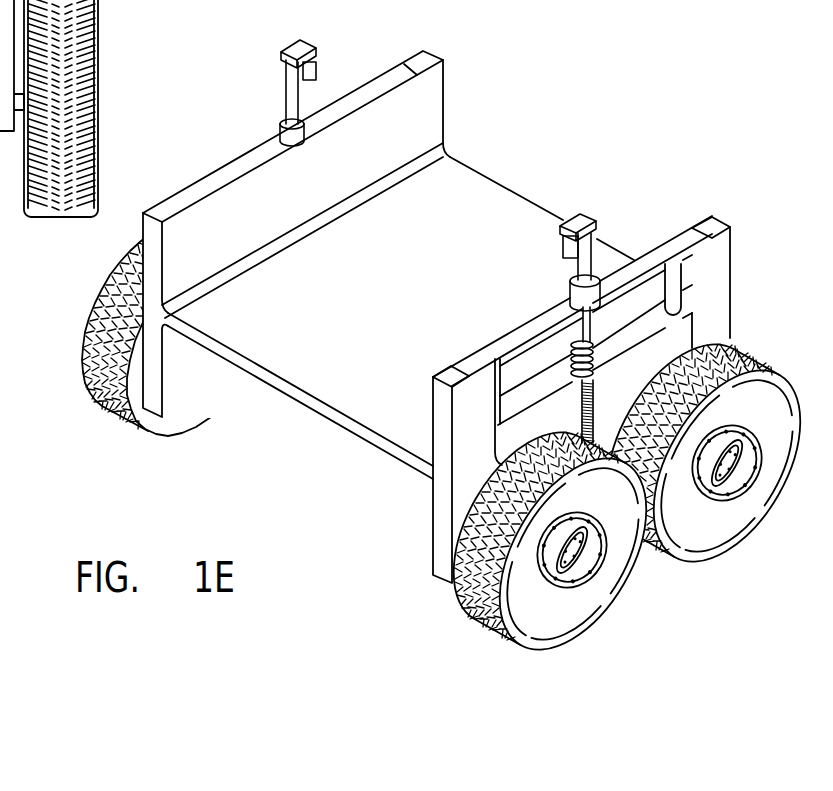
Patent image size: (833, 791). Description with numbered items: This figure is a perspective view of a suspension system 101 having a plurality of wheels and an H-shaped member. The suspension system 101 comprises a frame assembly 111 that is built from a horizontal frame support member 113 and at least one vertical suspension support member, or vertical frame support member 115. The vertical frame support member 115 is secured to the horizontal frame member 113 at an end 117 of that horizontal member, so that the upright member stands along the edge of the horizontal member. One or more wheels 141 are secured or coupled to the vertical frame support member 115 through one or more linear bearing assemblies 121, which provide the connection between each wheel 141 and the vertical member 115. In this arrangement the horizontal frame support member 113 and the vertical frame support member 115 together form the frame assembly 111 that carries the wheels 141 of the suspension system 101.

The suspension system 101 is at (565, 132).
The frame assembly 111 is at (330, 448).
The horizontal frame support member 113 is at (352, 390).
The vertical frame support member 115 is at (205, 246).
The end 117 is at (414, 470).
The linear bearing assembly 121 is at (708, 290).
The wheel 141 is at (743, 522).